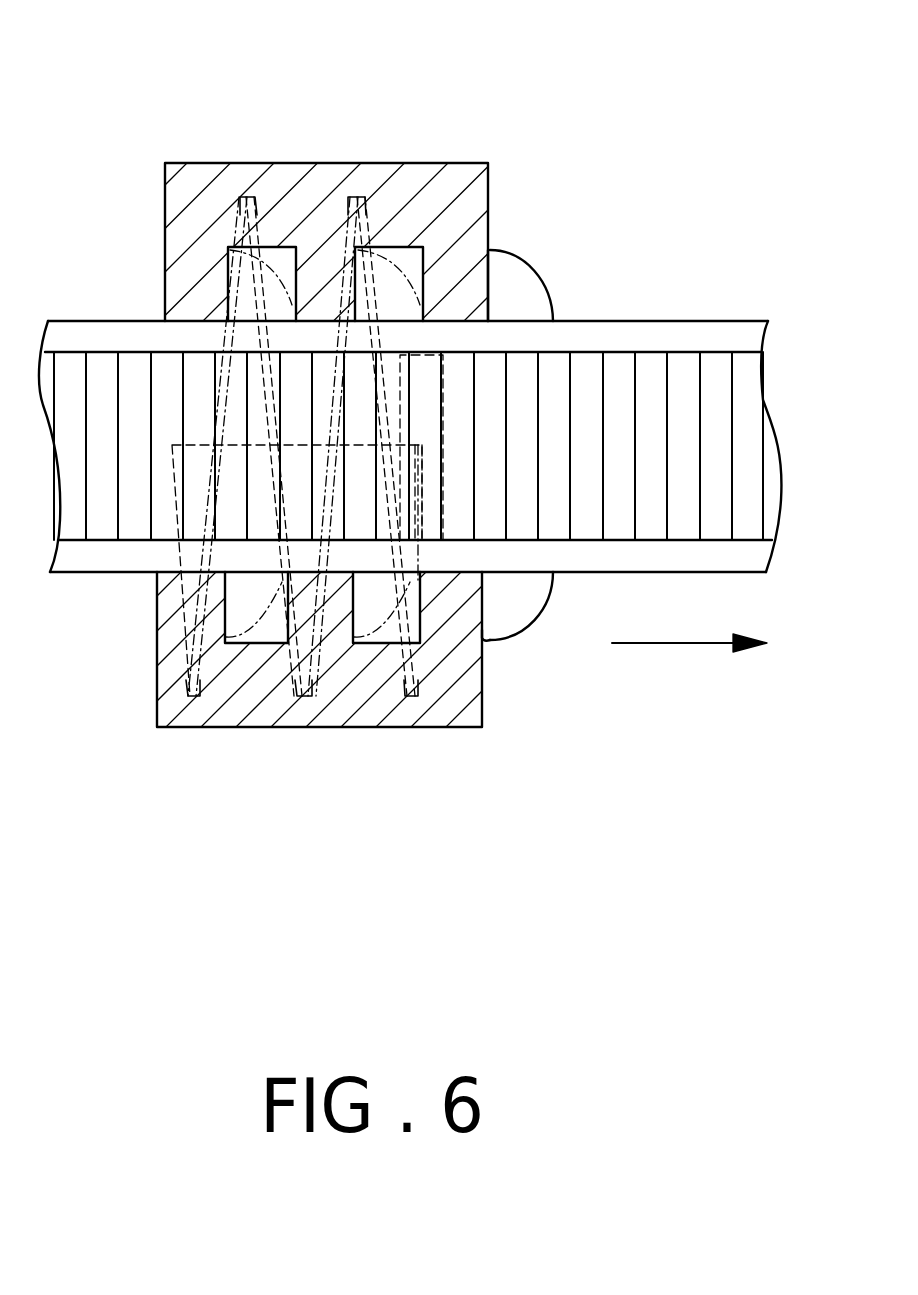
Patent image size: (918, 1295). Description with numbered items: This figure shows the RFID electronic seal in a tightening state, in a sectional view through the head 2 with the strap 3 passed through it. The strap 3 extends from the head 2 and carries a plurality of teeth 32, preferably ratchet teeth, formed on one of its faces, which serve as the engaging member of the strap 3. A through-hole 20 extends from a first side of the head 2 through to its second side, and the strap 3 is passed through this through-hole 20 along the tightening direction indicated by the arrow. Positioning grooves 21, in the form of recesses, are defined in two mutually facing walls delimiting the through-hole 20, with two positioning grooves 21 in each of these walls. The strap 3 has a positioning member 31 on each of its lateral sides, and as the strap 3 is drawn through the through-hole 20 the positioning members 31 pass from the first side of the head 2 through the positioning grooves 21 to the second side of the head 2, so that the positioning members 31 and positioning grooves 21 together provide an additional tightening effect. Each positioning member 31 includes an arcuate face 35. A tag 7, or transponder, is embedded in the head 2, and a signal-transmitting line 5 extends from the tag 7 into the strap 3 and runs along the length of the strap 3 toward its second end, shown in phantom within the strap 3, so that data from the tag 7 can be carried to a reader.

The head 2 is at (200, 163).
The strap 3 is at (700, 319).
The signal-transmitting line 5 is at (390, 615).
The tag 7 is at (398, 420).
The through-hole 20 is at (203, 572).
The positioning groove 21 is at (282, 257).
The positioning member 31 is at (503, 287).
The teeth 32 is at (95, 393).
The arcuate face 35 is at (547, 290).